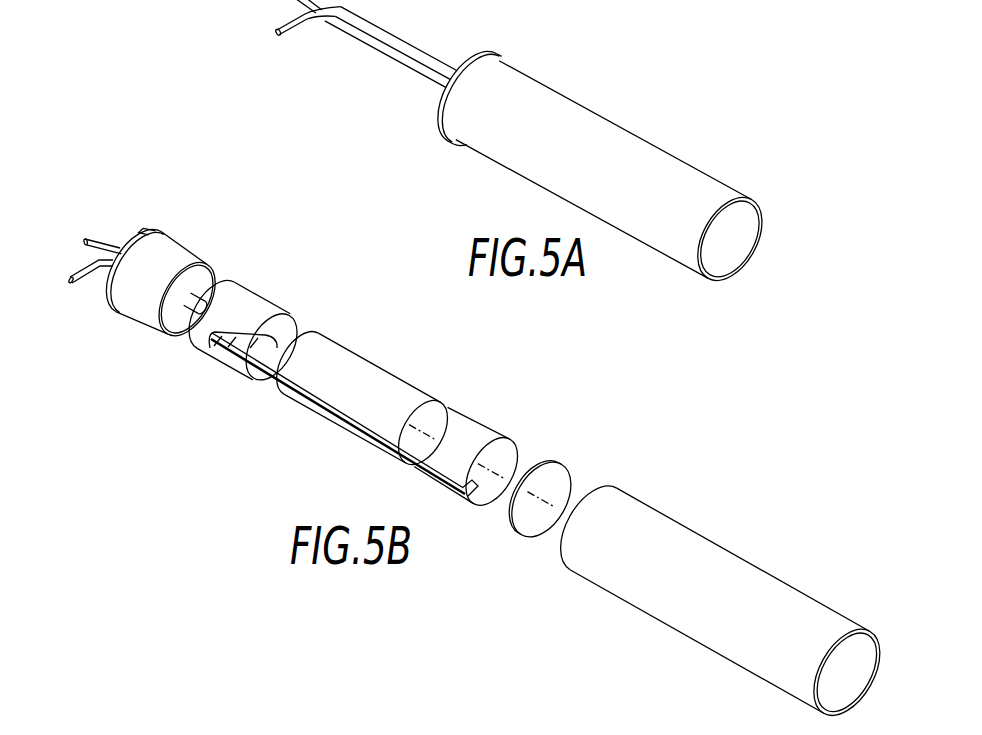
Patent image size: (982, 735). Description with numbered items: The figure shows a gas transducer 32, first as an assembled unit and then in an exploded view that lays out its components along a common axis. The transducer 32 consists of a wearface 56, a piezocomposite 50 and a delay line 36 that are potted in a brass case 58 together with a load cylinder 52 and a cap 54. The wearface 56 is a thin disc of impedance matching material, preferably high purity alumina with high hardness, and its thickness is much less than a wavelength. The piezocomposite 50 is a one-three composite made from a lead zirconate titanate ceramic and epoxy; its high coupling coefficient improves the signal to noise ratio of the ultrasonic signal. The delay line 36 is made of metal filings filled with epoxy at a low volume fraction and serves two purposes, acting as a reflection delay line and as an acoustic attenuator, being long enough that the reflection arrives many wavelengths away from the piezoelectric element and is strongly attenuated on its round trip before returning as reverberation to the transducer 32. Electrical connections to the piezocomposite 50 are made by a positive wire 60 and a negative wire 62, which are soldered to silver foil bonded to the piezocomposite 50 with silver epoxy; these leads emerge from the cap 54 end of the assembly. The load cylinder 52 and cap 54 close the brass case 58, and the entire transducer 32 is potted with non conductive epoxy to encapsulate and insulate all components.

In FIG. 5A, the transducer 32 is at (618, 112).
In FIG. 5B, the delay line 36 is at (355, 354).
In FIG. 5B, the piezocomposite 50 is at (488, 428).
In FIG. 5B, the load cylinder 52 is at (257, 297).
In FIG. 5B, the cap 54 is at (181, 250).
In FIG. 5B, the wearface 56 is at (541, 464).
In FIG. 5B, the brass case 58 is at (706, 541).
In FIG. 5B, the (+) wire 60 is at (84, 286).
In FIG. 5B, the (−) wire 62 is at (100, 244).